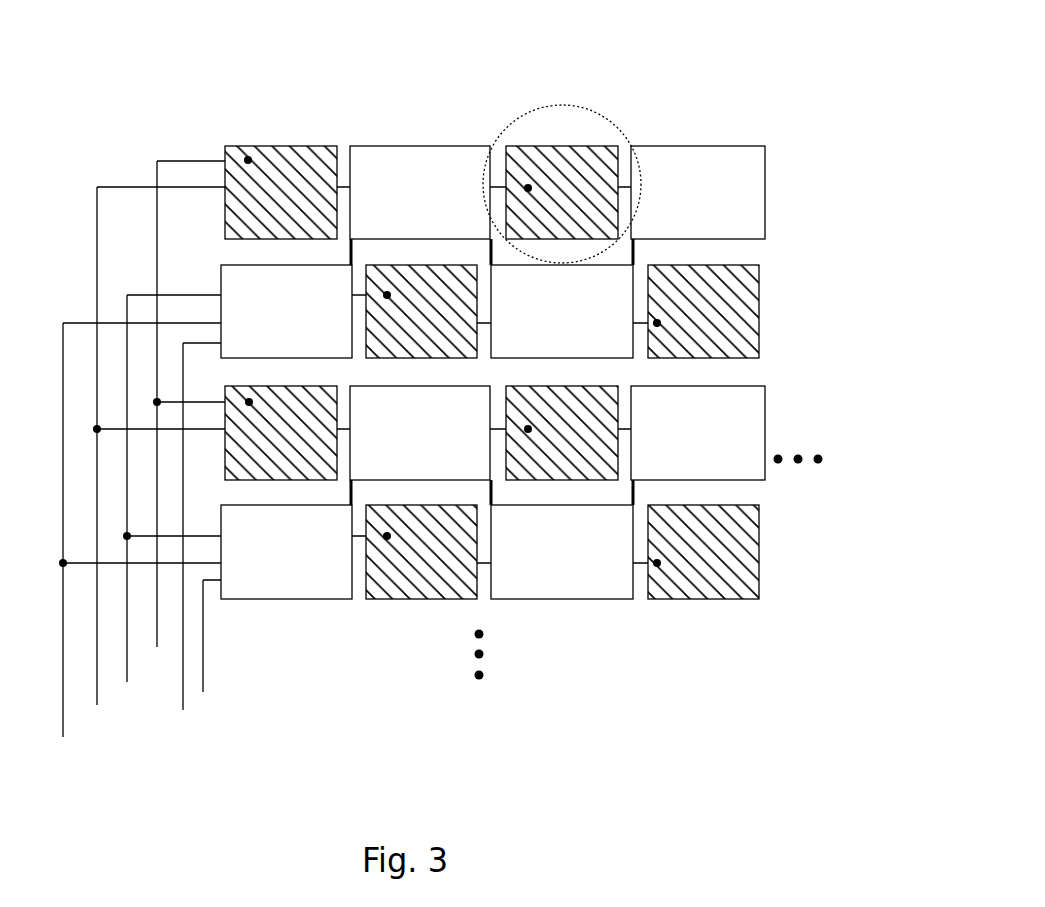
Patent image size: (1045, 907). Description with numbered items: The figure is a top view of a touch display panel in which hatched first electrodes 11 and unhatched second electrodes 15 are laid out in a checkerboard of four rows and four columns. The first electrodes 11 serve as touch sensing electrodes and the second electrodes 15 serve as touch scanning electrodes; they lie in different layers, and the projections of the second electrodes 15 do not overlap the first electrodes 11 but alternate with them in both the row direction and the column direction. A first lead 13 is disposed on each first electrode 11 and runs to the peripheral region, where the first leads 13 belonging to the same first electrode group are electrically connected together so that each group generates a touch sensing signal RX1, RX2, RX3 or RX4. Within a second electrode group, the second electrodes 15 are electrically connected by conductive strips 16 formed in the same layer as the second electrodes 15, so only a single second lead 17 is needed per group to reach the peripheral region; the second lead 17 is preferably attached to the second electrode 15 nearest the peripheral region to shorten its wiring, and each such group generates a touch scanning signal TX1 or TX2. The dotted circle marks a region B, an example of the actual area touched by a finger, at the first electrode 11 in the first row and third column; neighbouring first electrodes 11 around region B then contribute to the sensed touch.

The first electrode 11 is at (290, 144).
The first lead 13 is at (207, 140).
The second electrode 15 is at (427, 145).
The conductive strip 16 is at (654, 250).
The second lead 17 is at (204, 326).
The region B is at (613, 123).
The touch sensing signal RX1 is at (154, 419).
The touch sensing signal RX2 is at (129, 502).
The touch sensing signal RX3 is at (96, 460).
The touch sensing signal RX4 is at (63, 544).
The touch scanning signal TX1 is at (179, 541).
The touch scanning signal TX2 is at (214, 648).